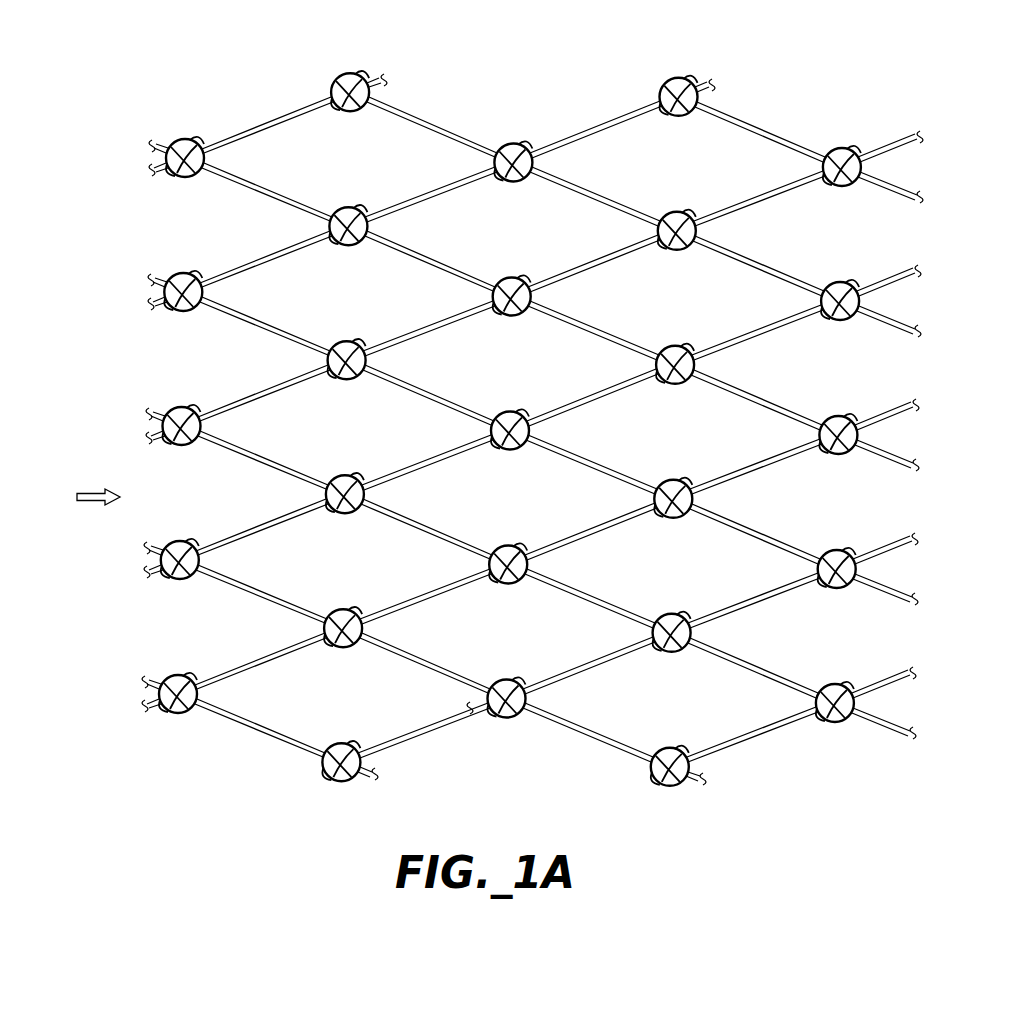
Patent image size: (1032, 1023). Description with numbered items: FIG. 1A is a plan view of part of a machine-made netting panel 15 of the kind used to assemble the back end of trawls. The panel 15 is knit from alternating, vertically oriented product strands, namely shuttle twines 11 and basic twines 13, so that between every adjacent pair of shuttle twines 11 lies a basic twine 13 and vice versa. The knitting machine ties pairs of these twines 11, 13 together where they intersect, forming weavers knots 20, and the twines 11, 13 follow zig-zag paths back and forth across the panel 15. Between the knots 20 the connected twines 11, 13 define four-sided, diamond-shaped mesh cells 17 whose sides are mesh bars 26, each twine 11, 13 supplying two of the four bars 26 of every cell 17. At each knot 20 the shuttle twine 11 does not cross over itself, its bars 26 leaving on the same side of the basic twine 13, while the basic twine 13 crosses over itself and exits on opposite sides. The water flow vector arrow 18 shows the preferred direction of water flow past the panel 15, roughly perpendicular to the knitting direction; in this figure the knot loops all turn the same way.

The shuttle twine 11 is at (532, 429).
The basic twine 13 is at (432, 392).
The netting panel 15 is at (532, 439).
The mesh cell 17 is at (689, 730).
The water flow vector arrow 18 is at (92, 501).
The weavers knot 20 is at (470, 797).
The mesh bar 26 is at (512, 425).